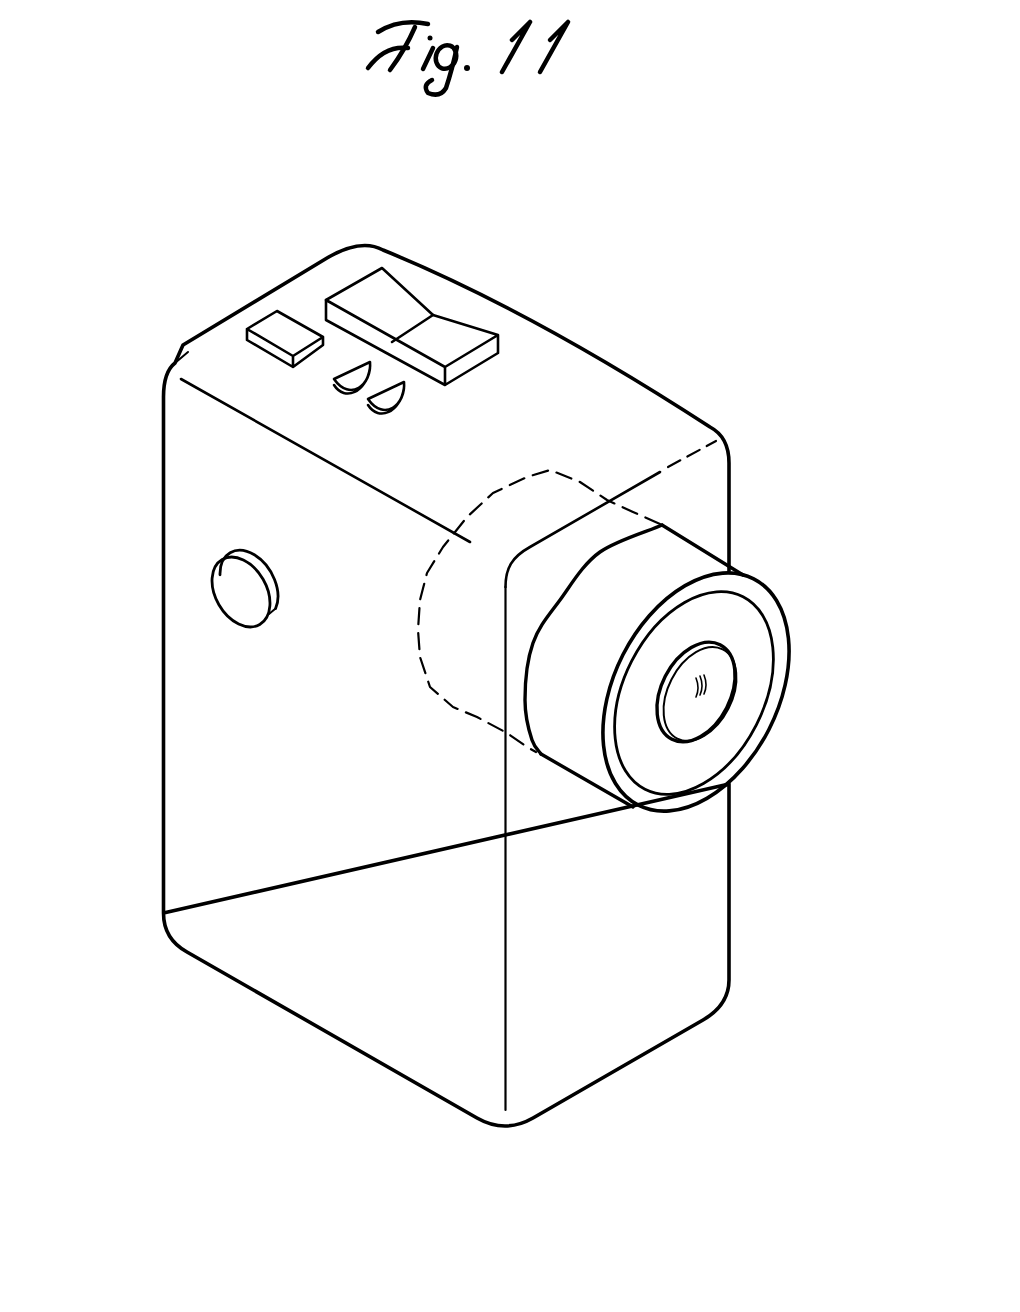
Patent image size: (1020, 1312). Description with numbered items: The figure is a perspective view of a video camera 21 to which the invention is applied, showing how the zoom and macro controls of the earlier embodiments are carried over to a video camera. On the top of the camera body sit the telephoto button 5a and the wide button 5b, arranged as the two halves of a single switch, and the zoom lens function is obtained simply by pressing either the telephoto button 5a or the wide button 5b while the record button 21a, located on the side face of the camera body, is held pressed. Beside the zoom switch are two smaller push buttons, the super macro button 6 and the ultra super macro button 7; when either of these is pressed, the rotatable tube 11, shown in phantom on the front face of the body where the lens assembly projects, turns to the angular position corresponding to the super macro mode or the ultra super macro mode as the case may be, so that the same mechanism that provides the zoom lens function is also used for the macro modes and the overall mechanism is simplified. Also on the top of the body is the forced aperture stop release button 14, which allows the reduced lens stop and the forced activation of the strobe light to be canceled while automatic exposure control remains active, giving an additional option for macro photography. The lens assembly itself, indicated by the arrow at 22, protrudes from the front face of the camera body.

The video camera 21 is at (613, 328).
The record button 21a is at (223, 587).
The forced aperture stop release button 14 is at (267, 325).
The telephoto button 5a is at (473, 333).
The wide button 5b is at (402, 297).
The super macro button 6 is at (393, 383).
The ultra super macro button 7 is at (355, 366).
The rotatable tube 11 is at (580, 477).
The lens barrel 22 is at (772, 724).